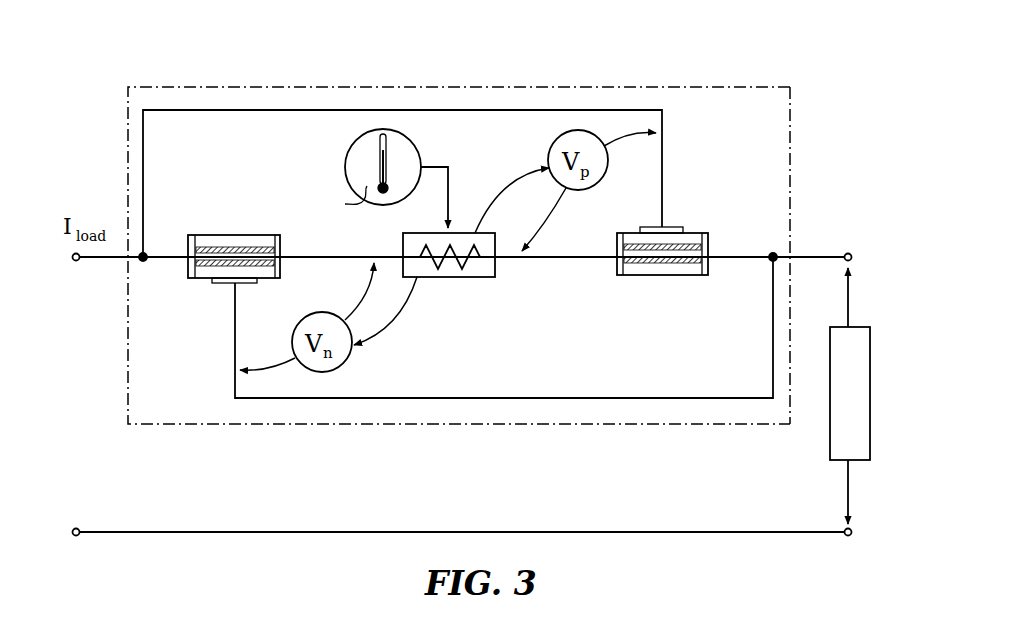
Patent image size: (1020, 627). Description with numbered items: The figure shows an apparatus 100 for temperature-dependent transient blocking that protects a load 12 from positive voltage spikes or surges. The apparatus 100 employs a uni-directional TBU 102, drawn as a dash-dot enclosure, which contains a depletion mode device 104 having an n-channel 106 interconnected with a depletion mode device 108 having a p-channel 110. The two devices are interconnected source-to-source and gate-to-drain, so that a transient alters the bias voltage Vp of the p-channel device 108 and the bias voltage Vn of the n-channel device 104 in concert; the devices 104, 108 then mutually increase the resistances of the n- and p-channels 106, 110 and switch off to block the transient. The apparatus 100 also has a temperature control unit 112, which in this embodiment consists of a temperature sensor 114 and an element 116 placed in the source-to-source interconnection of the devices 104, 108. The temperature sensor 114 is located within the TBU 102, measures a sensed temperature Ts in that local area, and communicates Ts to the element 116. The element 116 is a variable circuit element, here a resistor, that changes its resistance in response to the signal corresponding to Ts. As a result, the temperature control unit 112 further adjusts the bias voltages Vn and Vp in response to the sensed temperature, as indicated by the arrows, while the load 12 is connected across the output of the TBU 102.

The apparatus 100 is at (116, 99).
The uni-directional TBU 102 is at (790, 170).
The depletion mode device 104 is at (265, 239).
The n-channel 106 is at (218, 250).
The depletion mode device 108 is at (648, 276).
The p-channel 110 is at (690, 262).
The temperature control unit 112 is at (510, 303).
The temperature sensor 114 is at (346, 168).
The element 116 is at (455, 278).
The load 12 is at (830, 442).